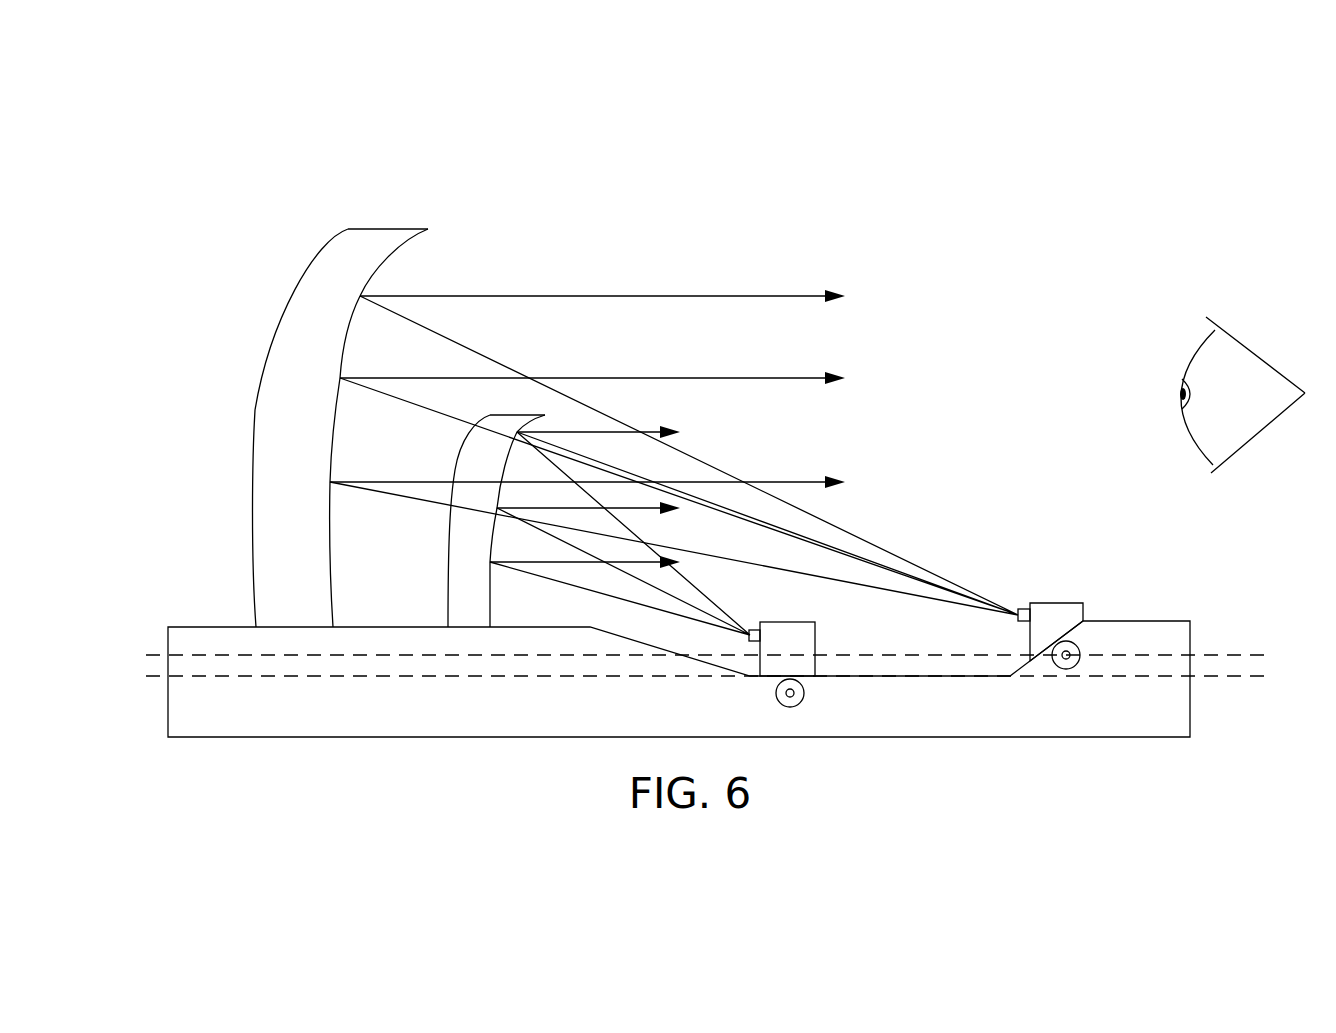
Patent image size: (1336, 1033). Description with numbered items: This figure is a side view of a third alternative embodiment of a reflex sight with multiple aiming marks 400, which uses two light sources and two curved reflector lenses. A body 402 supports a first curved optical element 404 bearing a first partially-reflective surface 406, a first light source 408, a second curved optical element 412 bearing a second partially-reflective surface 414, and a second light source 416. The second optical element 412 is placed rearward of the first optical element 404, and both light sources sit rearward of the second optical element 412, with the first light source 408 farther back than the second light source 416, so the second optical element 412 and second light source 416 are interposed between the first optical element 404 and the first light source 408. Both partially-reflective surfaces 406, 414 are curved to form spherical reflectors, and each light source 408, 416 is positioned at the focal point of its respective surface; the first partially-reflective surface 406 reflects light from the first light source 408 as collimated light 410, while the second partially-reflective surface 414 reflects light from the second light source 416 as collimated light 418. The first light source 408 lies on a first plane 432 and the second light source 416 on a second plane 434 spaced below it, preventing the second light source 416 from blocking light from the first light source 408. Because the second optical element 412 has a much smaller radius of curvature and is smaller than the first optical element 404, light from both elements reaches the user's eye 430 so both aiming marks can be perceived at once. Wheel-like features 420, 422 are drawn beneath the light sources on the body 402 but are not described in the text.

The reflex sight with multiple aiming marks 400 is at (935, 88).
The body 402 is at (166, 703).
The first curved optical element 404 is at (390, 229).
The first partially-reflective surface 406 is at (331, 534).
The first light source 408 is at (1056, 602).
The collimated light 410 is at (470, 296).
The second curved optical element 412 is at (520, 414).
The second partially-reflective surface 414 is at (491, 601).
The second light source 416 is at (816, 642).
The collimated light 418 is at (591, 432).
The first wheel / roller 420 is at (805, 693).
The second wheel / roller 422 is at (1080, 651).
The user's eye 430 is at (1228, 332).
The first plane 432 is at (1260, 654).
The second plane 434 is at (1264, 678).